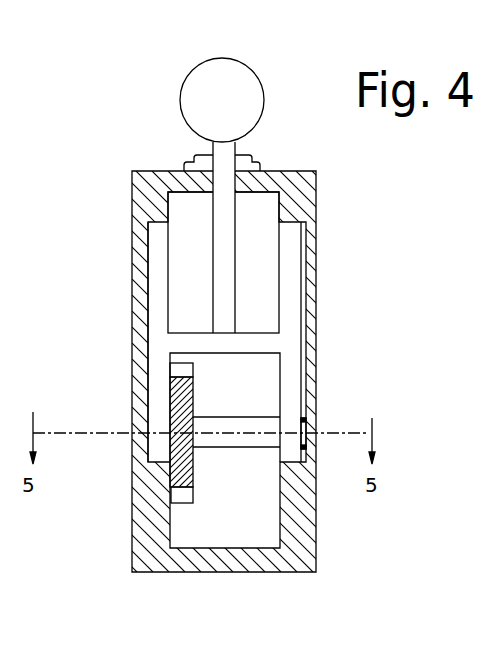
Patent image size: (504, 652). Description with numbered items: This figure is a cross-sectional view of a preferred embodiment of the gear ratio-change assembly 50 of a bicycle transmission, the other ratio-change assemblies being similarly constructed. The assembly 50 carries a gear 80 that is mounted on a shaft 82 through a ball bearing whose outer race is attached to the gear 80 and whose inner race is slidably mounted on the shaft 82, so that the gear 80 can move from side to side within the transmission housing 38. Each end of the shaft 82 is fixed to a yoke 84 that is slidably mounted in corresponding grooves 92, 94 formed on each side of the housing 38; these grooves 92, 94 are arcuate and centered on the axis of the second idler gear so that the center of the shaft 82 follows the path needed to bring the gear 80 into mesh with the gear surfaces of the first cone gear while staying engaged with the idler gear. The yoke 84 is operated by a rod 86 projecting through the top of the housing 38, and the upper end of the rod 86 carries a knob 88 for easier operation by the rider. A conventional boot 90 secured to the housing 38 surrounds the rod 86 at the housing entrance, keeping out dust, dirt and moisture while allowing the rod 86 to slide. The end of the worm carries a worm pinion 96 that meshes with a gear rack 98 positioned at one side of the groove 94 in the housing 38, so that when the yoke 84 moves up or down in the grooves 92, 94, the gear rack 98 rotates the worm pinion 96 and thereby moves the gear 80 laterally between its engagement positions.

The transmission housing 38 is at (307, 190).
The gear ratio-change assembly 50 is at (250, 348).
The gear 80 is at (180, 465).
The shaft 82 is at (260, 425).
The yoke 84 is at (288, 365).
The rod 86 is at (225, 257).
The knob 88 is at (245, 83).
The boot 90 is at (245, 158).
The groove 92 is at (157, 295).
The groove 94 is at (296, 257).
The worm pinion 96 is at (310, 423).
The gear rack 98 is at (303, 335).